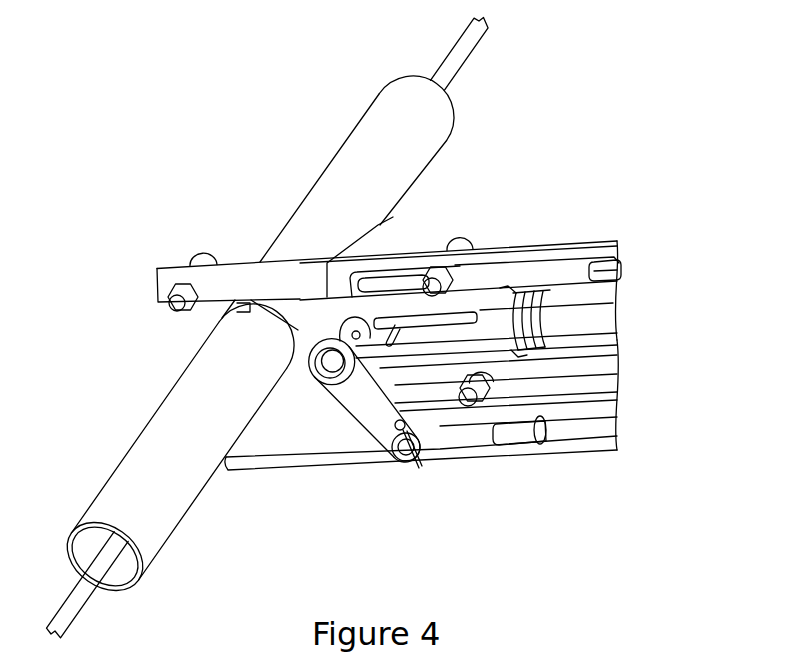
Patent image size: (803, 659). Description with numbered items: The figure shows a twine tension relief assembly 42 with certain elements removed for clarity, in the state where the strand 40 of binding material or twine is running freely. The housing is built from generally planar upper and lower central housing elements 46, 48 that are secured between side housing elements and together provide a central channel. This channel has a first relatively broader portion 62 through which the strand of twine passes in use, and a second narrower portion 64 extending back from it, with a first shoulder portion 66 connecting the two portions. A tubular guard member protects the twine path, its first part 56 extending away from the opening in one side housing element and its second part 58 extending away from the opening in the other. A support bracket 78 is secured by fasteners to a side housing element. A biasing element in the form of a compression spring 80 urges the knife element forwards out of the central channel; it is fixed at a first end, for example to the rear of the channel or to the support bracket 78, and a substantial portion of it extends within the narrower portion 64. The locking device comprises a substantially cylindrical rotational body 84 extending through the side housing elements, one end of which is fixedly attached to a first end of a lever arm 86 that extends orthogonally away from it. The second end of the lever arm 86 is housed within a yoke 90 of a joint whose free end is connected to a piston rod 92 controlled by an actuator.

The strand of binding material or twine 40 is at (468, 50).
The twine tension relief assembly 42 is at (103, 216).
The upper central housing element 46 is at (240, 282).
The lower central housing element 48 is at (272, 432).
The first part of tubular guard member 56 is at (337, 183).
The second part of tubular guard member 58 is at (136, 443).
The first relatively broader portion of the central channel 62 is at (328, 262).
The second narrower portion of the central channel 64 is at (612, 318).
The first shoulder portion 66 is at (512, 293).
The support bracket 78 is at (590, 370).
The compression spring 80 is at (592, 258).
The rotational body 84 is at (329, 368).
The lever arm 86 is at (375, 408).
The yoke 90 is at (452, 450).
The piston rod 92 is at (580, 442).